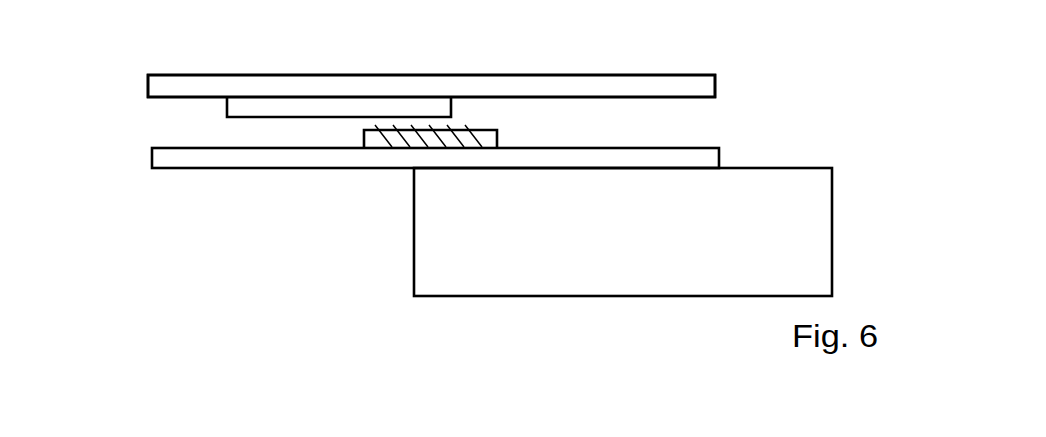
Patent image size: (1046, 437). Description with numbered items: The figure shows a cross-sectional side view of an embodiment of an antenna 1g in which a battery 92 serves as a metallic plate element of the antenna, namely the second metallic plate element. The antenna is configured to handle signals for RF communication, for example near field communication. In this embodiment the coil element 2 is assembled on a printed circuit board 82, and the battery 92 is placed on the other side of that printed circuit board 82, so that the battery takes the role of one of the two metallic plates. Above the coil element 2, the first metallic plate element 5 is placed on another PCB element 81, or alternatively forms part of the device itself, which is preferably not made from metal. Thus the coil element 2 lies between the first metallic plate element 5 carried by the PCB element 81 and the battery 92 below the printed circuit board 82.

The antenna 1g is at (107, 81).
The PCB element 81 is at (672, 83).
The first metallic plate element 5 is at (363, 103).
The coil element 2 is at (506, 132).
The printed circuit board 82 is at (697, 157).
The battery 92 is at (820, 236).